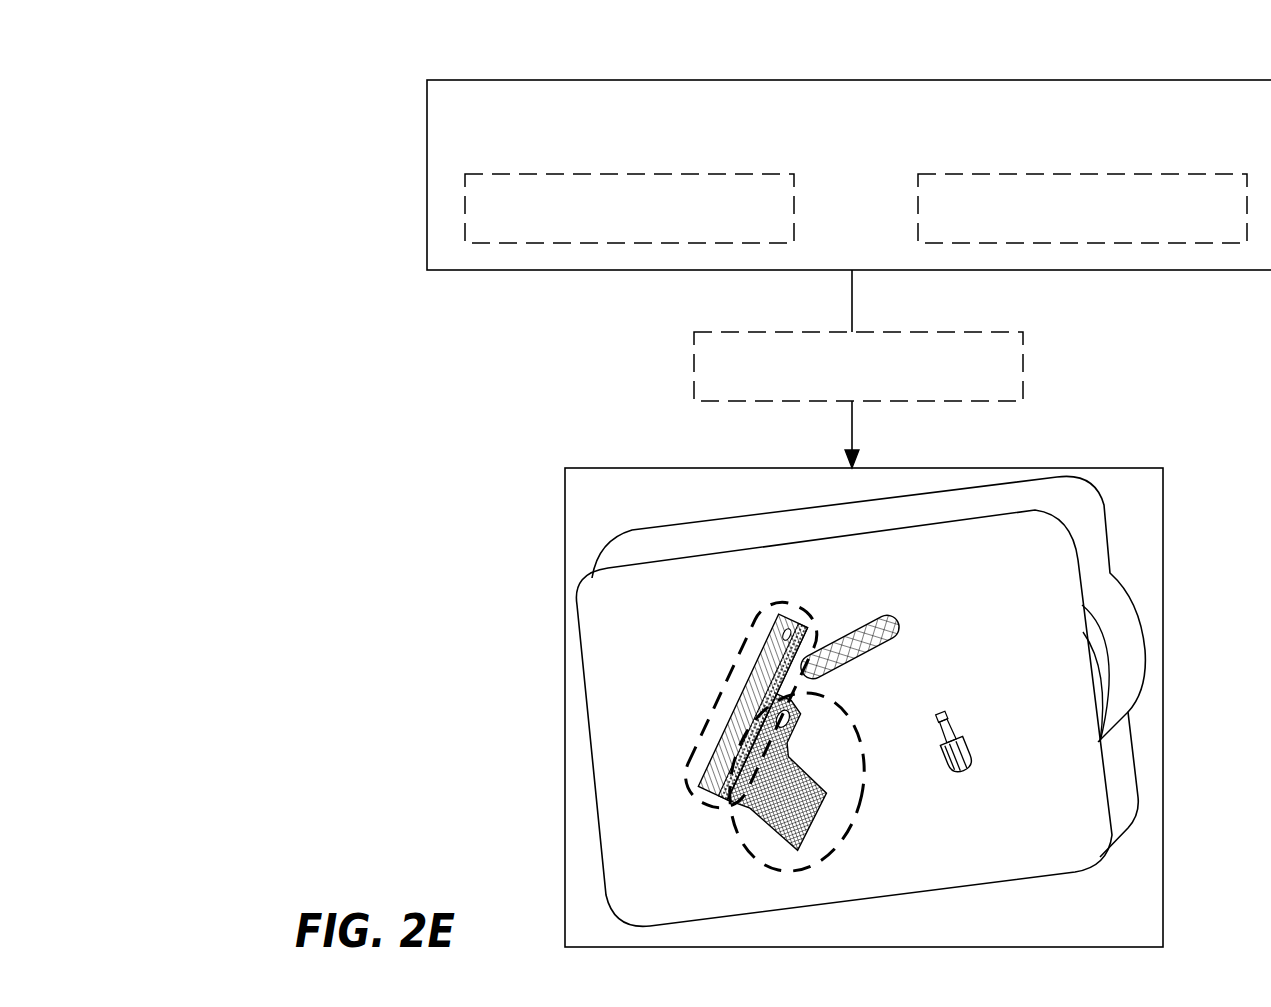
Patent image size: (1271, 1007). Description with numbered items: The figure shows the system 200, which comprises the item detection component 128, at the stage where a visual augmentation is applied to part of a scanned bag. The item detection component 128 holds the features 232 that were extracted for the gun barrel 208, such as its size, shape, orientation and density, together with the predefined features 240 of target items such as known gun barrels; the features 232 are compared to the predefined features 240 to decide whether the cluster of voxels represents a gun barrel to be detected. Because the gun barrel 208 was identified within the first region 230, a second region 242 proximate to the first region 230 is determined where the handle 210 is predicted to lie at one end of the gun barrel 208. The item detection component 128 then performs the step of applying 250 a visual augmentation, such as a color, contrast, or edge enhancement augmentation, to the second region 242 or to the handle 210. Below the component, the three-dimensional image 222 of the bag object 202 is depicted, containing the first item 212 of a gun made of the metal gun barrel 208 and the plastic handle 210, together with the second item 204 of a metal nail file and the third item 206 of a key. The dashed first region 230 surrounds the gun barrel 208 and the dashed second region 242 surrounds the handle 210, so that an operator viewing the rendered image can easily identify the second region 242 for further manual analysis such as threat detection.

The system 200 is at (332, 78).
The item detection component 128 is at (1107, 80).
The features 232 is at (518, 174).
The predefined features 240 is at (1078, 174).
The applying a visual augmentation 250 is at (1025, 378).
The three-dimensional image 222 is at (925, 468).
The bag object 202 is at (995, 885).
The second item 204 is at (890, 608).
The third item 206 is at (948, 725).
The gun barrel 208 is at (777, 610).
The handle 210 is at (812, 832).
The first item 212 is at (672, 710).
The first region 230 is at (724, 688).
The second region 242 is at (752, 855).